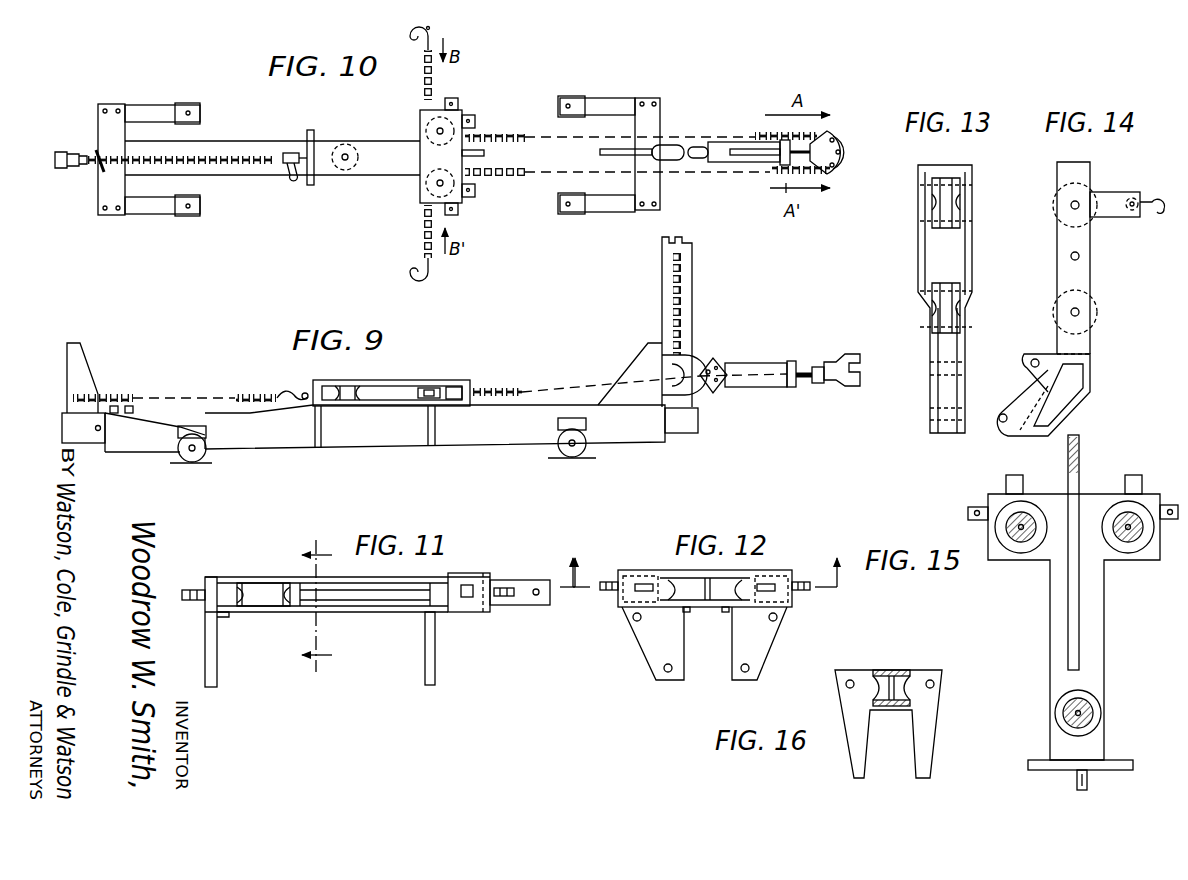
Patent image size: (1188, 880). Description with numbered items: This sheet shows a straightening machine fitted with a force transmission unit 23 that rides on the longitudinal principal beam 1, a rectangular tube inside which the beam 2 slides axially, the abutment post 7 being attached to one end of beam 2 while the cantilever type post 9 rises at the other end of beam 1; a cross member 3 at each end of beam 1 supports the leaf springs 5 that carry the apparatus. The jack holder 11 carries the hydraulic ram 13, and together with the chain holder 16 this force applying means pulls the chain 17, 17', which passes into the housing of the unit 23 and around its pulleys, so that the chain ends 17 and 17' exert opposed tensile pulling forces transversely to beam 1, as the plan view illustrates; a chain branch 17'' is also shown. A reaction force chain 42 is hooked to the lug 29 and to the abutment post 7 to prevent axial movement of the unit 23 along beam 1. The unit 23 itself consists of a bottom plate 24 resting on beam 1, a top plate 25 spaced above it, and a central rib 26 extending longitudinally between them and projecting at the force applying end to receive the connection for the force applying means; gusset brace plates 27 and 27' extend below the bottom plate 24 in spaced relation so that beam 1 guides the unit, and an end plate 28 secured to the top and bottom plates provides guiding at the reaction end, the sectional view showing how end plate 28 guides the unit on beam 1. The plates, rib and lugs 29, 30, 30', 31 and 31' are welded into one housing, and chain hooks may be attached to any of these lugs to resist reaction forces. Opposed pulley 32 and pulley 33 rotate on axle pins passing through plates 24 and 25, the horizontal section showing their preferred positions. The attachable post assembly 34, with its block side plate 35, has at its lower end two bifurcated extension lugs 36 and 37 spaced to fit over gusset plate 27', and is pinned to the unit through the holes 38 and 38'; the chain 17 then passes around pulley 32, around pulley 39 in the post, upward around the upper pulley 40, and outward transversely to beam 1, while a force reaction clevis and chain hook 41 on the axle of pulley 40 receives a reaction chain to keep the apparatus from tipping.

In FIG. 9, the longitudinal principal beam 1 is at (466, 437).
In FIG. 9, the beam 2 is at (62, 421).
In FIG. 10, the cross member 3 is at (97, 176).
In FIG. 10, the leaf springs 5 is at (150, 110).
In FIG. 9, the leaf springs 5 is at (165, 413).
In FIG. 10, the abutment post 7 is at (95, 155).
In FIG. 9, the abutment post 7 is at (88, 378).
In FIG. 9, the cantilever type post 9 is at (664, 295).
In FIG. 9, the jack holder 11 is at (742, 366).
In FIG. 9, the hydraulic ram 13 is at (790, 362).
In FIG. 9, the chain holder 16 is at (830, 366).
In FIG. 11, the chain holder 16 is at (294, 598).
In FIG. 10, the chain 17 is at (654, 141).
In FIG. 9, the chain 17 is at (586, 371).
In FIG. 10, the chain 17' is at (599, 115).
In FIG. 10, the chain branch 17'' is at (605, 223).
In FIG. 10, the force transmission unit 23 is at (375, 152).
In FIG. 9, the force transmission unit 23 is at (400, 383).
In FIG. 11, the bottom plate 24 is at (378, 610).
In FIG. 11, the top plate 25 is at (390, 577).
In FIG. 11, the central rib 26 is at (524, 580).
In FIG. 12, the central rib 26 is at (705, 591).
In FIG. 15, the central rib 26 is at (1075, 627).
In FIG. 11, the gusset brace plate 27 is at (411, 654).
In FIG. 12, the gusset brace plate 27 is at (640, 643).
In FIG. 12, the gusset brace plate 27' is at (779, 643).
In FIG. 11, the end plate 28 is at (218, 652).
In FIG. 16, the end plate 28 is at (860, 758).
In FIG. 11, the lug 29 is at (190, 590).
In FIG. 15, the lug 29 is at (1076, 778).
In FIG. 10, the lug 30 is at (485, 105).
In FIG. 15, the lug 30 is at (1018, 470).
In FIG. 10, the lug 30' is at (488, 194).
In FIG. 15, the lug 30' is at (1127, 467).
In FIG. 10, the lug 31 is at (470, 87).
In FIG. 15, the lug 31 is at (972, 498).
In FIG. 10, the lug 31' is at (476, 219).
In FIG. 15, the lug 31' is at (1171, 492).
In FIG. 15, the pulley 32 is at (1022, 542).
In FIG. 11, the pulley 33 is at (247, 585).
In FIG. 15, the pulley 33 is at (1062, 710).
In FIG. 13, the post assembly 34 is at (916, 227).
In FIG. 14, the post assembly 34 is at (1056, 233).
In FIG. 13, the block side plate 35 is at (968, 257).
In FIG. 14, the block side plate 35 is at (1092, 265).
In FIG. 13, the bifurcated extension lug 36 is at (936, 363).
In FIG. 14, the bifurcated extension lug 36 is at (1034, 354).
In FIG. 13, the bifurcated extension lug 37 is at (932, 411).
In FIG. 14, the bifurcated extension lug 37 is at (1040, 390).
In FIG. 12, the hole 38 is at (748, 635).
In FIG. 12, the hole 38' is at (774, 671).
In FIG. 13, the pulley 39 is at (962, 293).
In FIG. 14, the pulley 39 is at (1098, 311).
In FIG. 13, the upper pulley 40 is at (938, 189).
In FIG. 14, the upper pulley 40 is at (1057, 201).
In FIG. 14, the force reaction clevis and chain hook 41 is at (1116, 196).
In FIG. 10, the reaction force chain 42 is at (233, 155).
In FIG. 9, the reaction force chain 42 is at (207, 395).